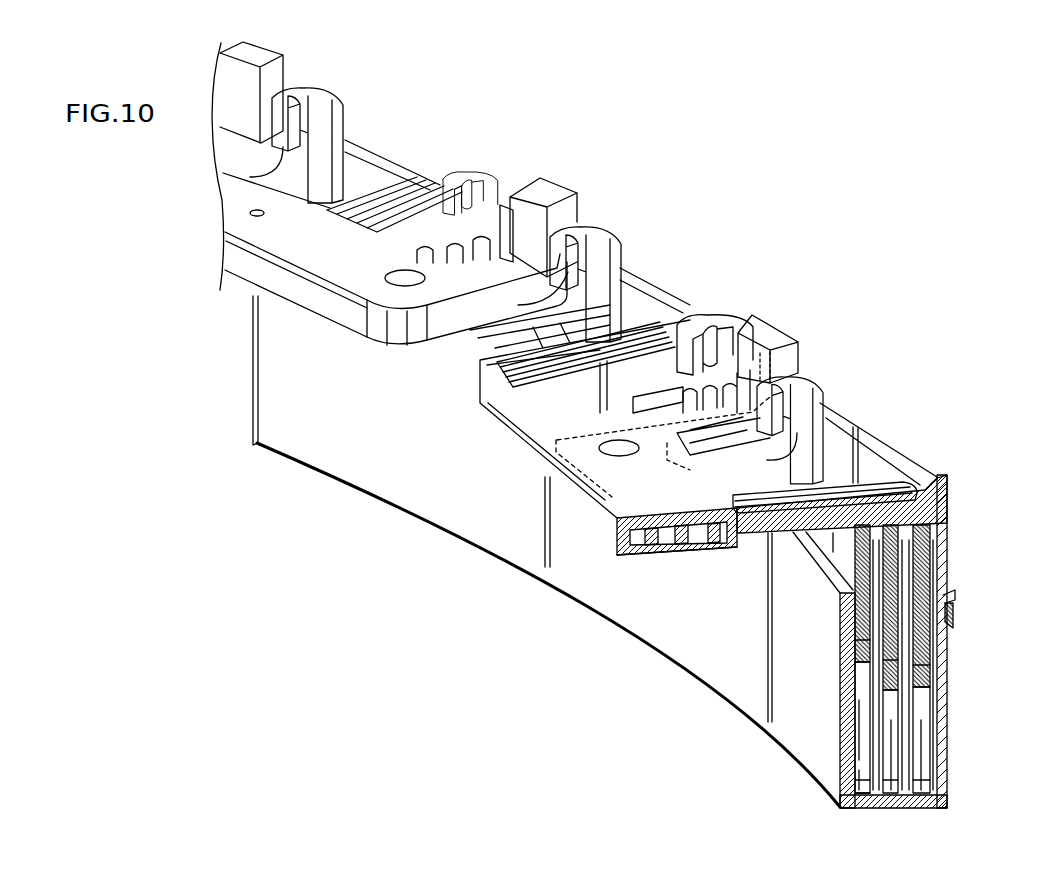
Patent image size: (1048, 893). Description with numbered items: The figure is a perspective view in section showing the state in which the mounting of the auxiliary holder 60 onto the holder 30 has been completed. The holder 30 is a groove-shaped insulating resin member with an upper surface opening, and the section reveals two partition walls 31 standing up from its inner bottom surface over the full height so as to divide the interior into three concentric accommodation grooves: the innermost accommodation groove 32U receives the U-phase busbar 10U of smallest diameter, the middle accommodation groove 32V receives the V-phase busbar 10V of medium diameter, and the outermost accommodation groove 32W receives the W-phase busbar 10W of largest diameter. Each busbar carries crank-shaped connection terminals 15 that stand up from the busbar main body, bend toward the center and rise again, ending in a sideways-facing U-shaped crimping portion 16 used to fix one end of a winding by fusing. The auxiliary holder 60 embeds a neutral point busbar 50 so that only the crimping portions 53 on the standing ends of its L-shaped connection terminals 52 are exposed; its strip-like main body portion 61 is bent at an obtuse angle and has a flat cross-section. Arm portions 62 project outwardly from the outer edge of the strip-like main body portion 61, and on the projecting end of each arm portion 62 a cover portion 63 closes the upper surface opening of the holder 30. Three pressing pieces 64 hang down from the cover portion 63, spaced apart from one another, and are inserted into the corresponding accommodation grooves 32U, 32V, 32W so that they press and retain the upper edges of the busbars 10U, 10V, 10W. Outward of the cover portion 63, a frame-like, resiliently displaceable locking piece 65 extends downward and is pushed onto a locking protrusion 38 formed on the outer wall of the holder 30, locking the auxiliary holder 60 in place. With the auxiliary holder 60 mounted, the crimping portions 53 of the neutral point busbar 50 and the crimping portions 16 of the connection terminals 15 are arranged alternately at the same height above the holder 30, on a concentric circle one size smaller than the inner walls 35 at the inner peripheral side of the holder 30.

The U-phase busbar 10U is at (843, 733).
The V-phase busbar 10V is at (893, 710).
The W-phase busbar 10W is at (920, 732).
The connection terminal 15 is at (333, 141).
The crimping portion 16 is at (297, 90).
The holder 30 is at (879, 399).
The partition walls 31 is at (943, 600).
The innermost accommodation groove 32U is at (857, 795).
The middle accommodation groove 32V is at (900, 790).
The outermost accommodation groove 32W is at (937, 775).
The inner wall 35 is at (418, 503).
The locking protrusion 38 is at (947, 603).
The neutral point busbar 50 is at (643, 557).
The connection terminal 52 is at (770, 322).
The crimping portion 53 is at (467, 173).
The auxiliary holder 60 is at (300, 283).
The strip-like main body portion 61 is at (593, 517).
The arm portion 62 is at (420, 193).
The cover portion 63 is at (897, 520).
The pressing piece 64 is at (923, 663).
The locking piece 65 is at (953, 622).